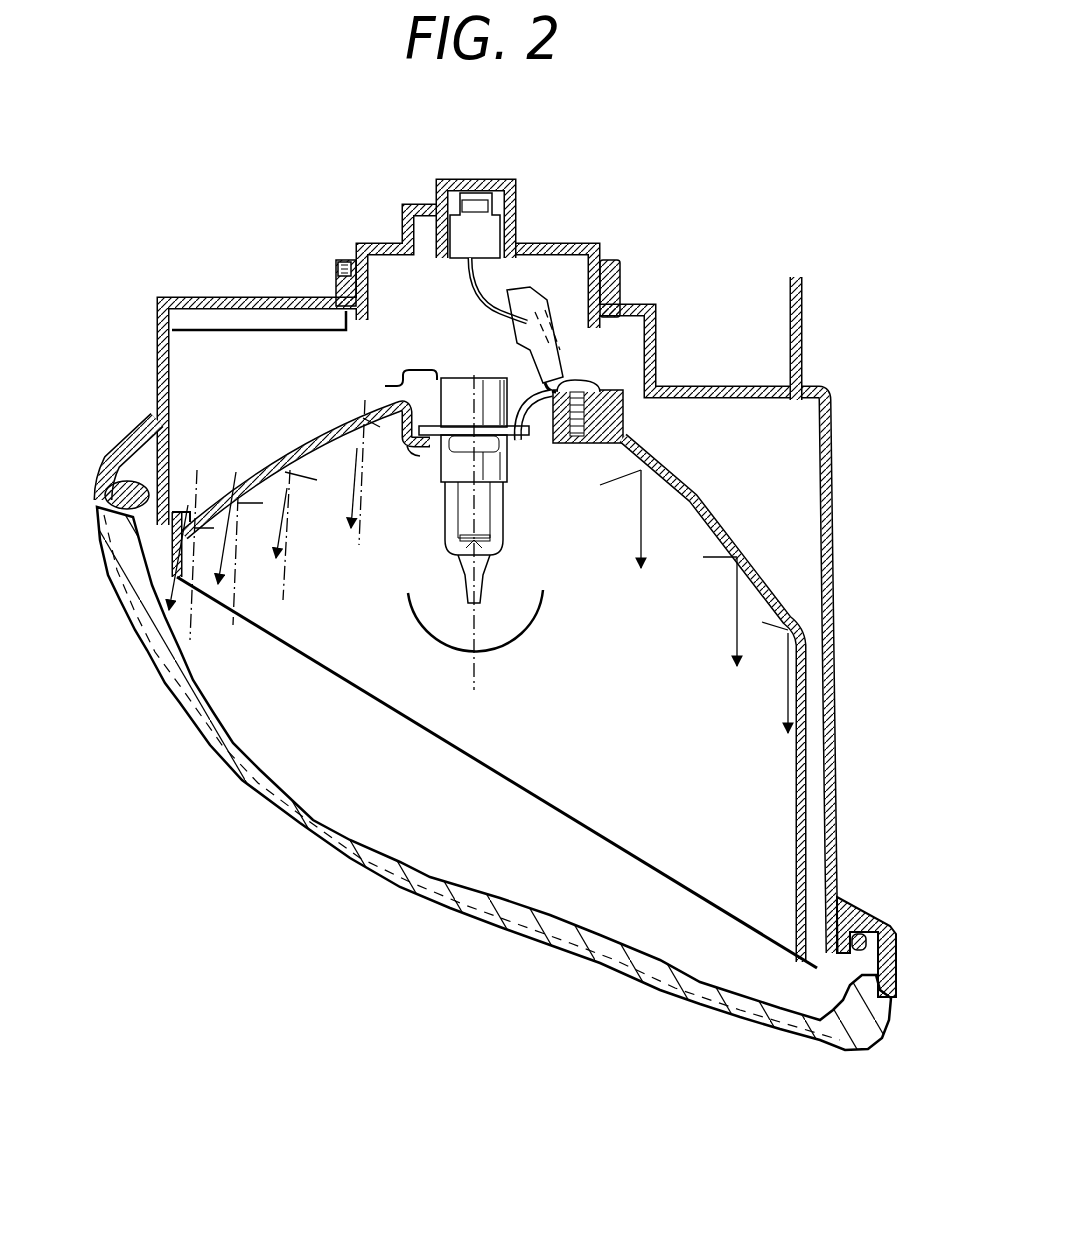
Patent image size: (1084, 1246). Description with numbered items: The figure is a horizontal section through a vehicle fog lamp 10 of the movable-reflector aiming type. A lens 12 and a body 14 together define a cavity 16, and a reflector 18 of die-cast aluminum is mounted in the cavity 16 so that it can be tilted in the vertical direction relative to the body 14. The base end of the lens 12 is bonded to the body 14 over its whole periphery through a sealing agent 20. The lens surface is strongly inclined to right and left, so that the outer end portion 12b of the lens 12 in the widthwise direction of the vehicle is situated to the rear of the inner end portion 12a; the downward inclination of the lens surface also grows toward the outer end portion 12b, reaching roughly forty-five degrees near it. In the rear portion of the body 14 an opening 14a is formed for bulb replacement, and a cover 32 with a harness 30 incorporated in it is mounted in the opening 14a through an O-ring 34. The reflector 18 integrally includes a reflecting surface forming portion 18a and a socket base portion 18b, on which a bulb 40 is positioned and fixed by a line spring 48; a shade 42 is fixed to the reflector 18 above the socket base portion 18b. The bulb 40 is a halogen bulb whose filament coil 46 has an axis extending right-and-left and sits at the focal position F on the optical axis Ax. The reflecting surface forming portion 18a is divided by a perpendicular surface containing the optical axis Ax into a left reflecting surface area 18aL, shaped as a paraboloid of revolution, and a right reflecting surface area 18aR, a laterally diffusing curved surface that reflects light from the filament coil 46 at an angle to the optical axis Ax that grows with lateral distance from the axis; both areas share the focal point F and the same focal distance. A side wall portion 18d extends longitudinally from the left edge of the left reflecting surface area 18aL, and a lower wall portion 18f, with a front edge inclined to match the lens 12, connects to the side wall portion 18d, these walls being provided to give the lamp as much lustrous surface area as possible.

The fog lamp 10 is at (717, 302).
The lens 12 is at (494, 757).
The inner end portion 12a is at (793, 1040).
The outer end portion 12b is at (137, 628).
The body 14 is at (847, 397).
The opening 14a is at (348, 325).
The cavity 16 is at (630, 784).
The reflector 18 is at (536, 674).
The reflecting surface forming portion 18a is at (273, 462).
The right reflecting surface area 18aR is at (274, 520).
The left reflecting surface area 18aL is at (700, 522).
The socket base portion 18b is at (412, 452).
The side wall portion 18d is at (815, 778).
The lower wall portion 18f is at (655, 840).
The sealing agent 20 is at (880, 925).
The harness 30 is at (470, 297).
The cover 32 is at (509, 182).
The O-ring 34 is at (338, 272).
The bulb 40 is at (486, 490).
The shade 42 is at (525, 632).
The filament coil 46 is at (505, 555).
The line spring 48 is at (410, 370).
The focal position F is at (460, 563).
The optical axis Ax is at (478, 670).